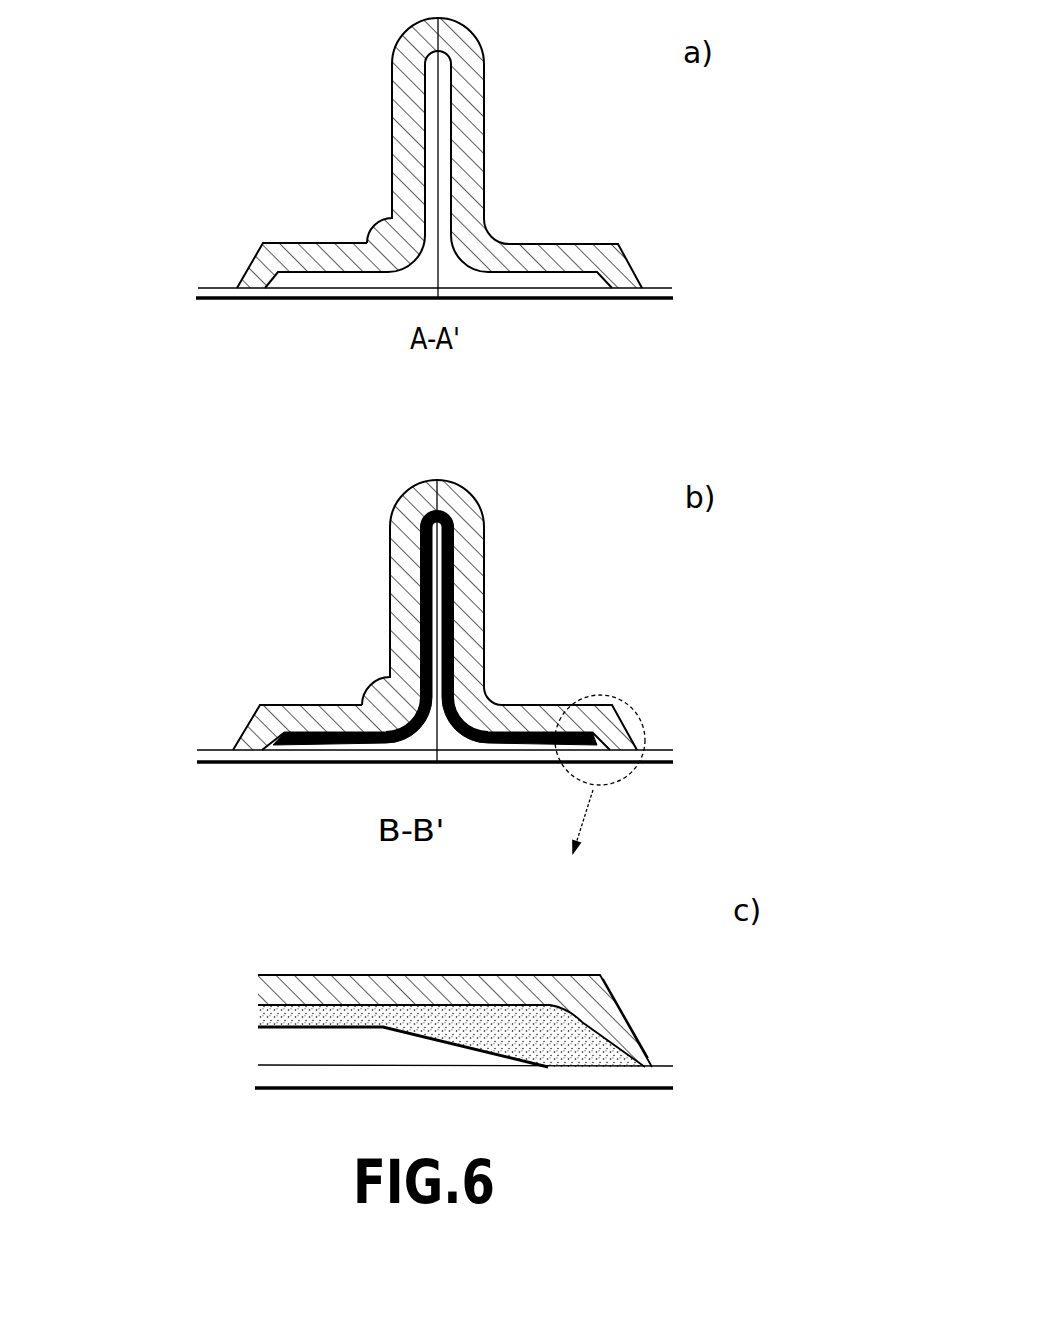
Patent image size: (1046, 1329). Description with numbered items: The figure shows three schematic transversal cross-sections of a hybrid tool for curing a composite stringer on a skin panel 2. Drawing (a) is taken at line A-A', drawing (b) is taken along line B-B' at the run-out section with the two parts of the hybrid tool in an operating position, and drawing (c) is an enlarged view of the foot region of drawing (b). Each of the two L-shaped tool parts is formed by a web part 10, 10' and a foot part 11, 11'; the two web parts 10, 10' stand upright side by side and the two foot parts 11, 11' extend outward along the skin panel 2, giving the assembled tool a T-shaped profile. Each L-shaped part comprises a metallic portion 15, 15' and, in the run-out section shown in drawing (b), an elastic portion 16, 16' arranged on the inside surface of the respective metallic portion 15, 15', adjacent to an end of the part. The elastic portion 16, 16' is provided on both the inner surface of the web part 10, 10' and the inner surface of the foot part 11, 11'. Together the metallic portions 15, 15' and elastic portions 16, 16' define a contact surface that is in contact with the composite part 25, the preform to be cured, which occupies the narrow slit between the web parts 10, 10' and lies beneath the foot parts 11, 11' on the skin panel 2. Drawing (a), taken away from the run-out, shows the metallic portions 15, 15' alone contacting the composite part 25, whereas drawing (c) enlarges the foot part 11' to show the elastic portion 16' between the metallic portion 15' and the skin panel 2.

The skin panel 2 is at (667, 290).
The web part 10 is at (350, 398).
The web part 10' is at (531, 398).
The foot part 11 is at (298, 455).
The foot part 11' is at (458, 615).
The metallic portion 15 is at (354, 272).
The metallic portion 15' is at (455, 542).
The elastic portion 16 is at (355, 669).
The elastic portion 16' is at (451, 789).
The composite part 25 is at (443, 117).